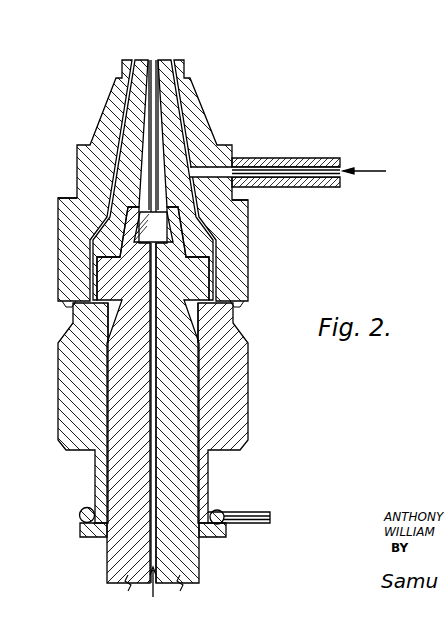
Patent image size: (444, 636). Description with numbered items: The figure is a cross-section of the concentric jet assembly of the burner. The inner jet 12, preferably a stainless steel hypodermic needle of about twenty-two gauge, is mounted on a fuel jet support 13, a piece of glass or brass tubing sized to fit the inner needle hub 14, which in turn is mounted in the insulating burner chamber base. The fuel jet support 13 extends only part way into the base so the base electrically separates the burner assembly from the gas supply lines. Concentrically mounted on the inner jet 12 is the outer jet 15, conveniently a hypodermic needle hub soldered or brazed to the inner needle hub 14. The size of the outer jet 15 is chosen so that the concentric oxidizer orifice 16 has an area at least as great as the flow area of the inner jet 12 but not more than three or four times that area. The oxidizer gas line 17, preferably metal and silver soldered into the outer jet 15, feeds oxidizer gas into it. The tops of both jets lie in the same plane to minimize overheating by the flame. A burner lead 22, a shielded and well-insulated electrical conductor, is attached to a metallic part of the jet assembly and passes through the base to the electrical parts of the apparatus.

The inner jet 12 is at (164, 59).
The fuel jet support 13 is at (107, 556).
The inner needle hub 14 is at (58, 372).
The outer jet 15 is at (58, 222).
The concentric oxidizer orifice 16 is at (138, 59).
The oxidizer gas line 17 is at (297, 159).
The burner lead 22 is at (252, 511).